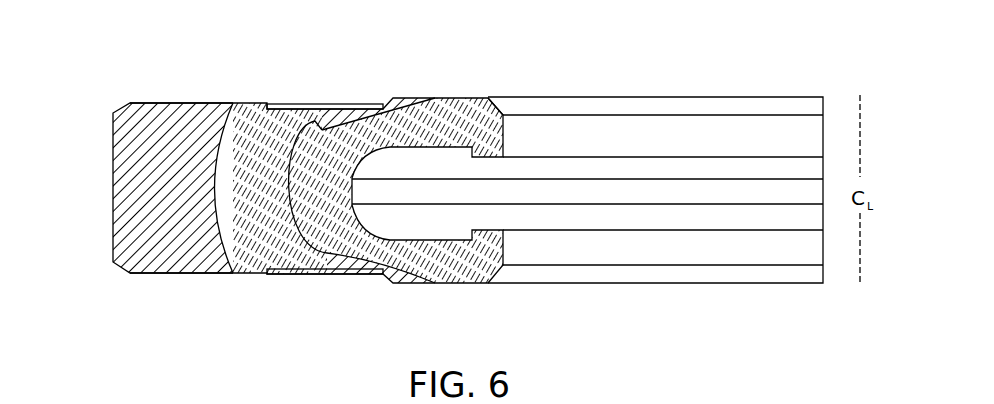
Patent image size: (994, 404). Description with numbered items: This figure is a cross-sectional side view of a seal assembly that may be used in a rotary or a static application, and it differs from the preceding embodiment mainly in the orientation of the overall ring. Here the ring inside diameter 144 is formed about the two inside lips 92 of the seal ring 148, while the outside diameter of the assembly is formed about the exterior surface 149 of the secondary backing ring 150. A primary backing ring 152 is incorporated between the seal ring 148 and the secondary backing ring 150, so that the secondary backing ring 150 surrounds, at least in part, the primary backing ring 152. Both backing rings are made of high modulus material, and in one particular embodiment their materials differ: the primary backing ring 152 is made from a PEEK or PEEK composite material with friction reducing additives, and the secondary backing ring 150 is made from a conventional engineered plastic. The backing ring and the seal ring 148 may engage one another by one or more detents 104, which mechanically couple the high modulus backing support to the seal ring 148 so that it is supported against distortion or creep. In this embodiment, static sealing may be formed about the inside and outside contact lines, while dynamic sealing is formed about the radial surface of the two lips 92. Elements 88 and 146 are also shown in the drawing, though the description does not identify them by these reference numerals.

The optical fiber 88 is at (414, 188).
The inside lips 92 is at (497, 130).
The detent 104 is at (317, 128).
The ring inside diameter 144 is at (722, 120).
The bottom surface of insert 146 is at (113, 237).
The seal ring 148 is at (487, 95).
The exterior surface 149 is at (113, 125).
The secondary backing ring 150 is at (111, 176).
The primary backing ring 152 is at (274, 101).